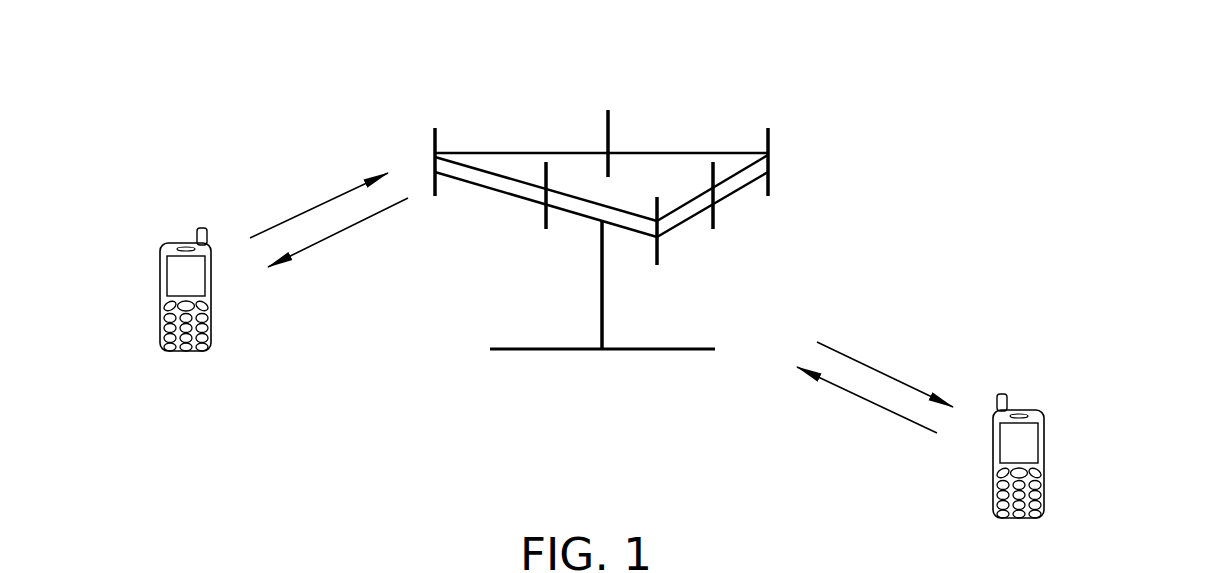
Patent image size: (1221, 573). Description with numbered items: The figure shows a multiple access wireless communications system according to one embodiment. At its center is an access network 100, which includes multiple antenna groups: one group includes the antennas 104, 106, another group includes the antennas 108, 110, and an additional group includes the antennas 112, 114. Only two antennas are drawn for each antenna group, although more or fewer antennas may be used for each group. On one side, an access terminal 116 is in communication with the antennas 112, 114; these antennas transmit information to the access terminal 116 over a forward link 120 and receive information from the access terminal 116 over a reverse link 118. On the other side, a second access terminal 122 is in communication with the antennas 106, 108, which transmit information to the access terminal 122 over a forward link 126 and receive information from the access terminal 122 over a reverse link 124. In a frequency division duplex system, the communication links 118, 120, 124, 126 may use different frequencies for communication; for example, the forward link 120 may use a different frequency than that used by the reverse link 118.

The access network 100 is at (533, 349).
The antenna 104 is at (657, 248).
The antenna 106 is at (713, 215).
The antenna 108 is at (768, 182).
The antenna 110 is at (608, 110).
The antenna 112 is at (435, 130).
The antenna 114 is at (546, 213).
The access terminal 116 is at (188, 243).
The reverse link 118 is at (322, 203).
The forward link 120 is at (340, 235).
The access terminal 122 is at (1018, 408).
The reverse link 124 is at (865, 400).
The forward link 126 is at (883, 368).